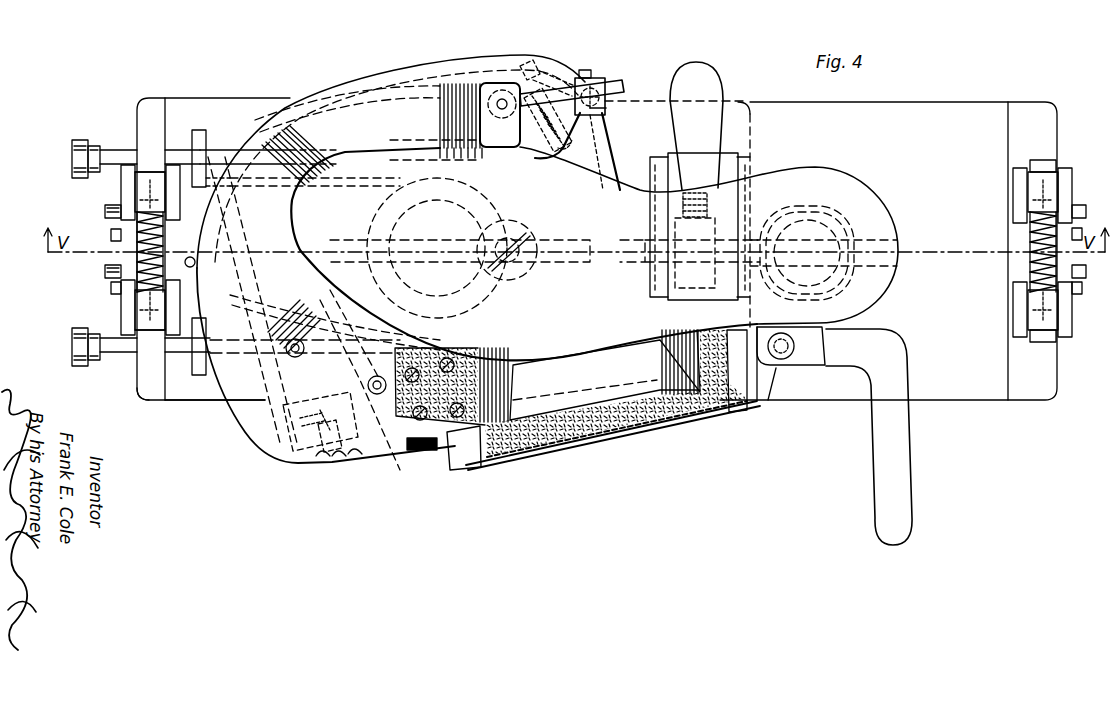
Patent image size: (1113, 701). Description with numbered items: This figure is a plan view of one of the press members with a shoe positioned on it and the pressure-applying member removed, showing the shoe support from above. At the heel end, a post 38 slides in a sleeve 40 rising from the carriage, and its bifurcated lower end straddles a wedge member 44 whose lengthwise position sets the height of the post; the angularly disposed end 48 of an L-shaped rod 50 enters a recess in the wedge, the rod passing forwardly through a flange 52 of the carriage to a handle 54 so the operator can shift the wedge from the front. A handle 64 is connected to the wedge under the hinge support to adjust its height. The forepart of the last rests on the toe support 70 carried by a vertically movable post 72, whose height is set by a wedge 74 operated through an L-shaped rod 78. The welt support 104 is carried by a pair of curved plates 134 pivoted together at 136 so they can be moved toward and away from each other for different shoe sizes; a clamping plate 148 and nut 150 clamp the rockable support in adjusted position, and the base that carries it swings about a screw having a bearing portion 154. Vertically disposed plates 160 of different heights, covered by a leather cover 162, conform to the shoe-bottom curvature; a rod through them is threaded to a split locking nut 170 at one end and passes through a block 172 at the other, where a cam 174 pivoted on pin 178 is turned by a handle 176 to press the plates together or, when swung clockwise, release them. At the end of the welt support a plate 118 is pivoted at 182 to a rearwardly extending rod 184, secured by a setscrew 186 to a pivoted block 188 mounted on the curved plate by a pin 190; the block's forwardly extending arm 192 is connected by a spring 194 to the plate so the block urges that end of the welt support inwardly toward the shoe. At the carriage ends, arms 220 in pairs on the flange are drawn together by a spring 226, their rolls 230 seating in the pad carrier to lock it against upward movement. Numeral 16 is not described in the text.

The adjusting knob 16 is at (78, 158).
The post 38 is at (808, 220).
The sleeve 40 is at (826, 215).
The wedge member 44 is at (882, 245).
The angularly disposed end 48 is at (652, 292).
The L-shaped rod 50 is at (186, 386).
The flange 52 is at (146, 386).
The handle 54 is at (78, 354).
The handle 64 is at (718, 84).
The toe support 70 is at (478, 150).
The post 72 is at (455, 300).
The wedge 74 is at (557, 244).
The L-shaped rod 78 is at (183, 156).
The welt support 104 is at (402, 72).
The plate 118 is at (488, 92).
The curved plates 134 is at (300, 104).
The pivot 136 is at (191, 257).
The clamping plate 148 is at (288, 432).
The nut 150 is at (328, 456).
The bearing portion 154 is at (516, 270).
The plates 160 is at (518, 466).
The leather cover 162 is at (596, 442).
The split locking nut 170 is at (420, 450).
The block 172 is at (740, 400).
The cam 174 is at (773, 372).
The handle 176 is at (906, 474).
The pivot pin 178 is at (795, 352).
The pivot 182 is at (502, 98).
The rod 184 is at (622, 86).
The setscrew 186 is at (594, 70).
The pivoted block 188 is at (606, 106).
The pin 190 is at (577, 151).
The arm 192 is at (568, 78).
The spring 194 is at (553, 134).
The arms 220 is at (126, 292).
The spring 226 is at (160, 262).
The rolls 230 is at (150, 182).